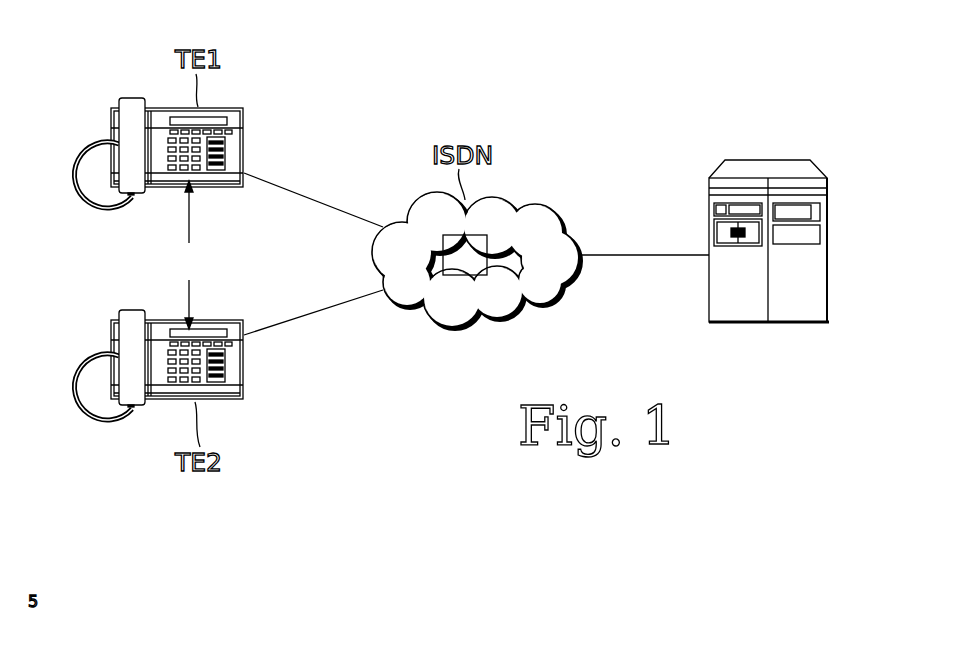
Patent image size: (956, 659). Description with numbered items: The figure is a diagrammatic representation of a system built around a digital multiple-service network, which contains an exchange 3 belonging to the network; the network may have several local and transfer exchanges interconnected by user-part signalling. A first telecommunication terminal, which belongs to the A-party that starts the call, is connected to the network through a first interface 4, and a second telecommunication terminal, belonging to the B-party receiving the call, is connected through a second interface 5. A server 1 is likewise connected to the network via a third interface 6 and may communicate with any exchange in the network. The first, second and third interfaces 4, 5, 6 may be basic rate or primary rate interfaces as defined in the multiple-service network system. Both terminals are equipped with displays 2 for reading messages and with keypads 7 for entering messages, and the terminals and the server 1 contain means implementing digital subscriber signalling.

The server 1 is at (763, 158).
The display 2 is at (227, 121).
The exchange 3 is at (472, 268).
The first interface 4 is at (312, 192).
The second interface 5 is at (327, 309).
The third interface 6 is at (613, 254).
The keypad 7 is at (189, 255).